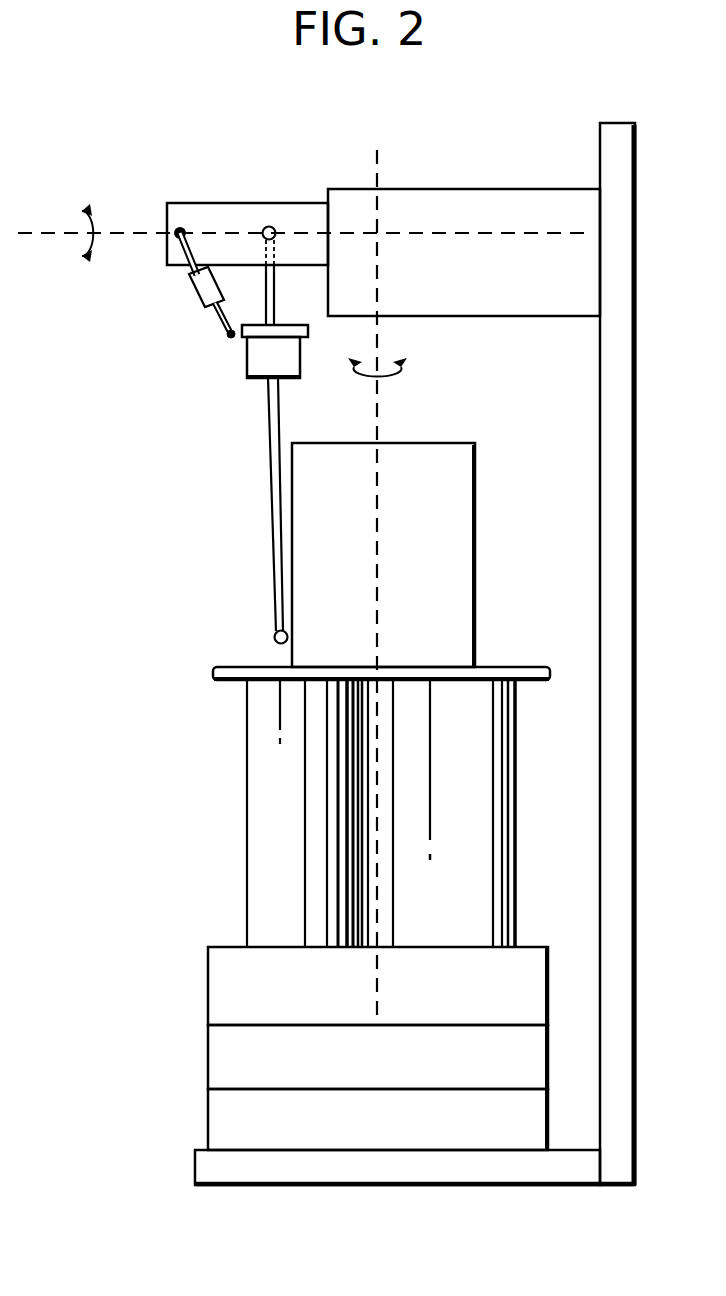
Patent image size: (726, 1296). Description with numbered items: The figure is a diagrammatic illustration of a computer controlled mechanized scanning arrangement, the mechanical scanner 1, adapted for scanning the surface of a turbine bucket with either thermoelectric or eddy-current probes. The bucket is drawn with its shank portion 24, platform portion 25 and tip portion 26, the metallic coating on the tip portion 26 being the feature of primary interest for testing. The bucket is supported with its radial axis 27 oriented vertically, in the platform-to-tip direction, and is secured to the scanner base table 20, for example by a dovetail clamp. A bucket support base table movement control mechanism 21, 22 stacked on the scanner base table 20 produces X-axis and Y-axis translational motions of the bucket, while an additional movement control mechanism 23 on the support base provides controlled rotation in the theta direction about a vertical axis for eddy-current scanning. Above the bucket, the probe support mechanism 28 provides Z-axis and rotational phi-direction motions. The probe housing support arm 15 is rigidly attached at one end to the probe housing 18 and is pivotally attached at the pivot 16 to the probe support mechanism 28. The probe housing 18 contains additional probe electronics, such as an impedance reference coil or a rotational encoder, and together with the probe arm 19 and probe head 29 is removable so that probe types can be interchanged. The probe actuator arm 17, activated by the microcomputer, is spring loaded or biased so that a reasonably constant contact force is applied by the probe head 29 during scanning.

The mechanical scanner 1 is at (452, 1206).
The probe housing support arm 15 is at (276, 290).
The pivotal attachment 16 is at (264, 227).
The probe actuator arm 17 is at (193, 285).
The probe housing 18 is at (247, 368).
The probe arm 19 is at (270, 470).
The scanner base table 20 is at (195, 1152).
The base table movement control mechanism (X-axis) 21 is at (208, 1112).
The base table movement control mechanism (Y-axis) 22 is at (208, 1050).
The additional movement control mechanism 23 is at (208, 980).
The shank portion 24 is at (515, 718).
The platform portion 25 is at (520, 667).
The tip portion 26 is at (477, 488).
The radial axis 27 is at (378, 410).
The probe support mechanism 28 is at (352, 189).
The probe head 29 is at (274, 637).